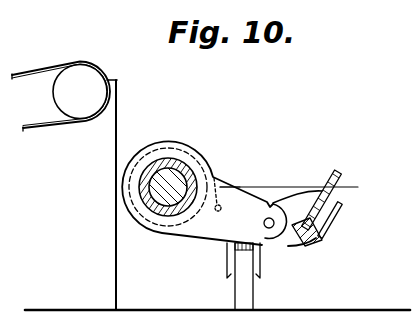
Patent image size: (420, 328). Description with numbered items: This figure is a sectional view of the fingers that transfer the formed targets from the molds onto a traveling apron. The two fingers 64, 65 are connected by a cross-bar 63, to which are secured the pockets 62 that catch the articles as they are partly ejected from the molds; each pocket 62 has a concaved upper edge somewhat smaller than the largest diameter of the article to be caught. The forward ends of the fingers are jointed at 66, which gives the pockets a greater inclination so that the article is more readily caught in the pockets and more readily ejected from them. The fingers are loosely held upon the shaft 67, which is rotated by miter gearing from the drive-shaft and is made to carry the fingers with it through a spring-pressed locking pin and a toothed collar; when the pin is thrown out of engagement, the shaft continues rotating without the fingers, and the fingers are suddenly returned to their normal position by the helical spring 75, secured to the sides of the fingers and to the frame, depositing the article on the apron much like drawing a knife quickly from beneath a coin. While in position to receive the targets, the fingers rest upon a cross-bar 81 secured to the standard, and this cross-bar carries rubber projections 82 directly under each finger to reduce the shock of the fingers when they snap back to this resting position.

The pocket 62 is at (343, 202).
The cross-bar 63 is at (314, 195).
The finger 64 is at (225, 205).
The finger 65 is at (240, 194).
The joint 66 is at (270, 216).
The shaft 67 is at (183, 173).
The helical spring 75 is at (163, 147).
The cross-bar 81 is at (235, 251).
The rubber projection 82 is at (262, 250).